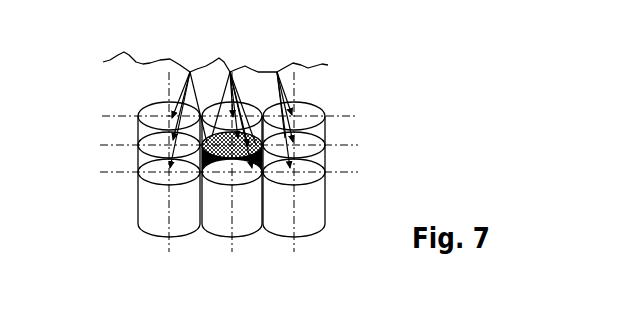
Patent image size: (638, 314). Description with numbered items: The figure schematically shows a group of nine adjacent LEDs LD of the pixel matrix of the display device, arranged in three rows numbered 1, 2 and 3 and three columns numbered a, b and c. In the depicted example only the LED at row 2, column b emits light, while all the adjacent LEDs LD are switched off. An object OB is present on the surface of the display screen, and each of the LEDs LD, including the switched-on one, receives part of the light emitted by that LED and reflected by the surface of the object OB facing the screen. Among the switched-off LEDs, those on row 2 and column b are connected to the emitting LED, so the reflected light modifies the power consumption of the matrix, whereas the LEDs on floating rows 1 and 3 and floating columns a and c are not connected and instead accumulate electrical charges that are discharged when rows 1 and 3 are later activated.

The object OB is at (198, 59).
The LED LD is at (140, 112).
The row 1 is at (238, 116).
The row 2 is at (237, 145).
The row 3 is at (237, 173).
The column a is at (168, 174).
The column b is at (230, 174).
The column c is at (292, 174).